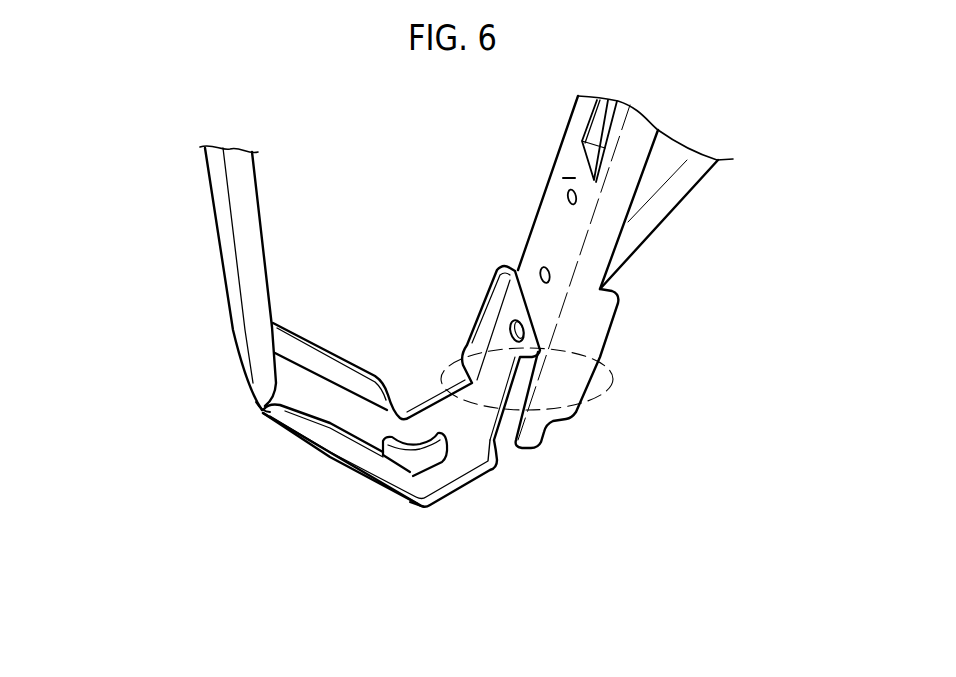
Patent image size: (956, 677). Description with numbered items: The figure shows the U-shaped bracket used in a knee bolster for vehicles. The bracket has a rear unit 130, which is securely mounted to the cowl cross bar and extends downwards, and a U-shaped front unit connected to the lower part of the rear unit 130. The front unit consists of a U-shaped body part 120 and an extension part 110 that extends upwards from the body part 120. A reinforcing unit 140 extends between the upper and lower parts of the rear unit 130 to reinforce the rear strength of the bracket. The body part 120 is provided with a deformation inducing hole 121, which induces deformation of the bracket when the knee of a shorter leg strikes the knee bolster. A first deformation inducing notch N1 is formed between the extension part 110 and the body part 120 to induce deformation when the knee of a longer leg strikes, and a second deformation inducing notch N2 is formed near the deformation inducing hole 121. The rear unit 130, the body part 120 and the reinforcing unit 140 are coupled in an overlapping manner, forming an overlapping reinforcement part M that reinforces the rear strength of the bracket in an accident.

The extension part 110 is at (230, 267).
The body part 120 is at (337, 412).
The deformation inducing hole 121 is at (423, 455).
The rear unit 130 is at (557, 207).
The reinforcing unit 140 is at (672, 183).
The overlapping reinforcement part M is at (611, 377).
The first deformation inducing notch N1 is at (263, 412).
The second deformation inducing notch N2 is at (432, 505).